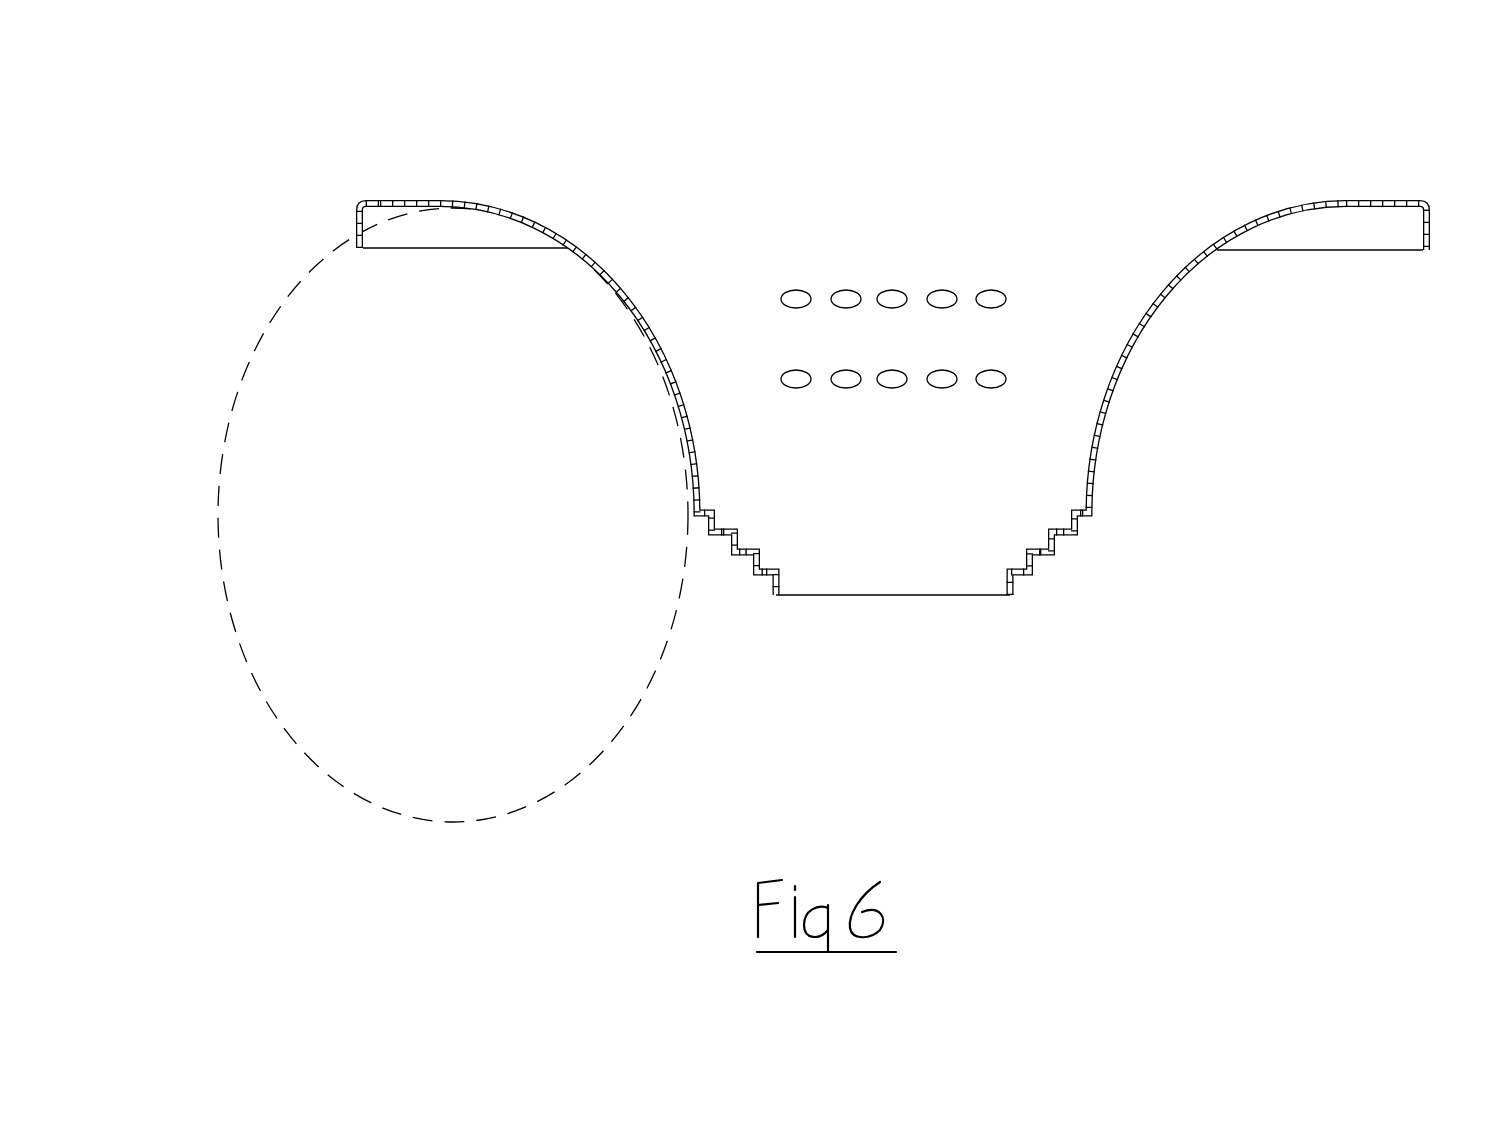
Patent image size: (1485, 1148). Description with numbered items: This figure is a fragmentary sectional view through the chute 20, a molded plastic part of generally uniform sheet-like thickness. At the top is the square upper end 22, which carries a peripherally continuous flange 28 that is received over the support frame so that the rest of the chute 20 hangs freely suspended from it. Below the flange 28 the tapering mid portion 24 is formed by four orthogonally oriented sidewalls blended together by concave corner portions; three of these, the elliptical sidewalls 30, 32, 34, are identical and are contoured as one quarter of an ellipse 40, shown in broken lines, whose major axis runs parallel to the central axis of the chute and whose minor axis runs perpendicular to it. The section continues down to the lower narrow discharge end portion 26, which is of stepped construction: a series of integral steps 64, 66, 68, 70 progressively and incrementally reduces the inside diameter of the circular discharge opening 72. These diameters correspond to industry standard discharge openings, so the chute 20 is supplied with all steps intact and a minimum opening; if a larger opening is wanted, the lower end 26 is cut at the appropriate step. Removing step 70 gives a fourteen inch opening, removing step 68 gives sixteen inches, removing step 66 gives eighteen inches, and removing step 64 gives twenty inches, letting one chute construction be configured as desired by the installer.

The chute 20 is at (820, 455).
The upper end 22 is at (445, 198).
The tapering mid portion 24 is at (572, 359).
The lower narrow discharge end portion 26 is at (679, 634).
The peripherally continuous flange 28 is at (357, 230).
The elliptical sidewall 30 is at (1191, 359).
The elliptical sidewall 32 is at (1037, 431).
The elliptical sidewall 34 is at (642, 323).
The ellipse 40 is at (565, 785).
The step 64 is at (1087, 517).
The step 66 is at (1063, 540).
The step 68 is at (743, 557).
The step 70 is at (765, 575).
The circular chute discharge opening 72 is at (1007, 587).